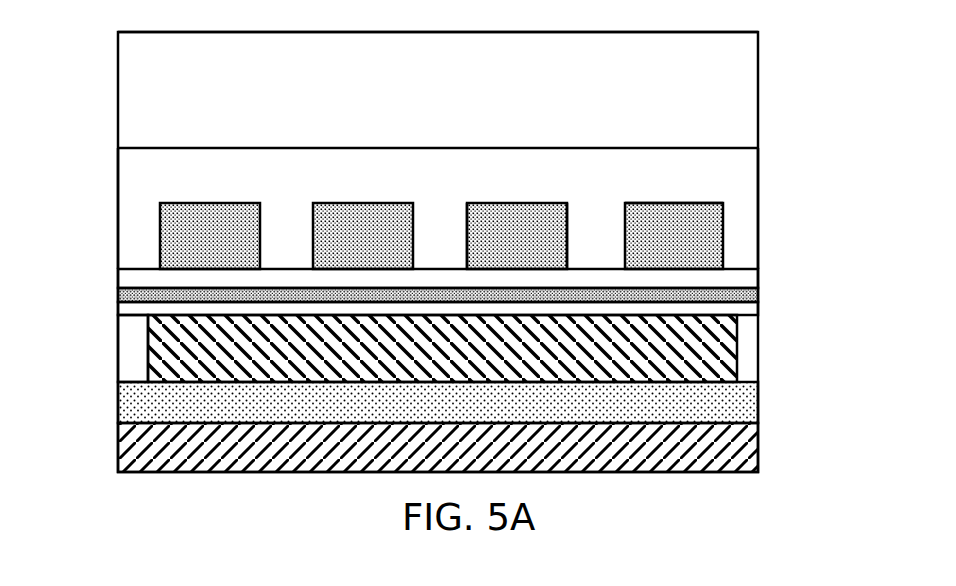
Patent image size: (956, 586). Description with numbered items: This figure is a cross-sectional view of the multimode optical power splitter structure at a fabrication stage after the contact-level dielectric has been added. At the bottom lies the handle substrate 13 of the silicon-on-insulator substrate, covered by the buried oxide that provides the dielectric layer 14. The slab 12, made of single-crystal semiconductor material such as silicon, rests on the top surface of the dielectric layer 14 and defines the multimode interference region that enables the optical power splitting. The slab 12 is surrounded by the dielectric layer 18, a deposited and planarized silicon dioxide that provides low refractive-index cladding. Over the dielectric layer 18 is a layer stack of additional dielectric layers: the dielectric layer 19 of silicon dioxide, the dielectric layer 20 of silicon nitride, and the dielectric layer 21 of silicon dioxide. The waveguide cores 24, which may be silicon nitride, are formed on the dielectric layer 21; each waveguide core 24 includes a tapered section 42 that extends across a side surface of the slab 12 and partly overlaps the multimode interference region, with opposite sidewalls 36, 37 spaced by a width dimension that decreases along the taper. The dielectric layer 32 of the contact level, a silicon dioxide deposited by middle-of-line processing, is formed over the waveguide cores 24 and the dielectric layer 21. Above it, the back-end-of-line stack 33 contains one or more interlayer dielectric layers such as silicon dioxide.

The slab 12 is at (650, 350).
The handle substrate 13 is at (148, 458).
The dielectric layer 14 is at (150, 410).
The dielectric layer 18 is at (137, 350).
The dielectric layer 19 is at (138, 313).
The dielectric layer 20 is at (742, 298).
The dielectric layer 21 is at (140, 283).
The waveguide cores 24 is at (138, 199).
The dielectric layer 32 is at (722, 205).
The back-end-of-line stack 33 is at (160, 80).
The sidewall 36 is at (466, 253).
The sidewall 37 is at (568, 253).
The tapered section 42 is at (186, 239).